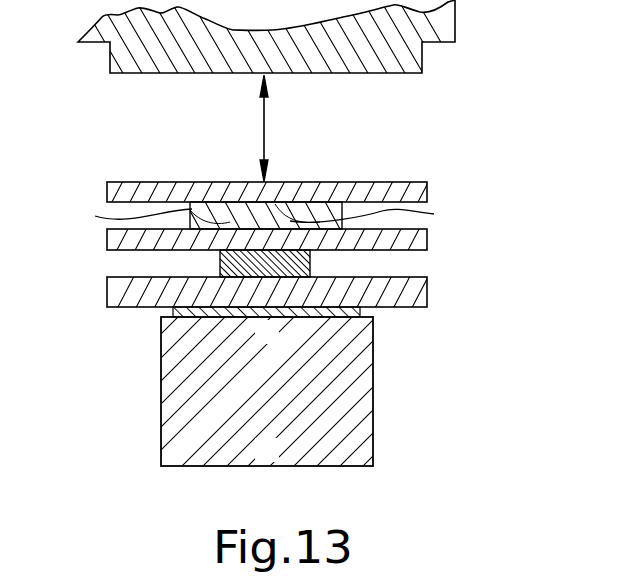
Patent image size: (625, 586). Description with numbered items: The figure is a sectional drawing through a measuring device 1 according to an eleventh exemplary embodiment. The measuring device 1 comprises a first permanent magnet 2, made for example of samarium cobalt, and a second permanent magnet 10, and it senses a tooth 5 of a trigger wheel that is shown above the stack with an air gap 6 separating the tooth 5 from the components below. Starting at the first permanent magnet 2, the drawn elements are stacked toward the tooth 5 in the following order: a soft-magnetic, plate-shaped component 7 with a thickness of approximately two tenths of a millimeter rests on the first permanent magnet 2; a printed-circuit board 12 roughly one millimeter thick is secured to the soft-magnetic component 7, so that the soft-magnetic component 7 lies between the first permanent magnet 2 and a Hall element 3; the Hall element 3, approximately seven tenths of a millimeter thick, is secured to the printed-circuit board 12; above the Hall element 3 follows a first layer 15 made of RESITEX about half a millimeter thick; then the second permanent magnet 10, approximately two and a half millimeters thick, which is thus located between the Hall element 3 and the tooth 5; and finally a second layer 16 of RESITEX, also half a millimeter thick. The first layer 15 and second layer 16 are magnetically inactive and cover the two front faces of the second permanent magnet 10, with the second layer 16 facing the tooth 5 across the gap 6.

The measuring device 1 is at (296, 234).
The first permanent magnet 2 is at (172, 405).
The Hall element 3 is at (220, 264).
The tooth 5 is at (412, 62).
The air gap 6 is at (195, 121).
The soft-magnetic component 7 is at (175, 311).
The second permanent magnet 10 is at (240, 207).
The printed-circuit board 12 is at (115, 295).
The first layer 15 is at (115, 239).
The second layer 16 is at (115, 188).